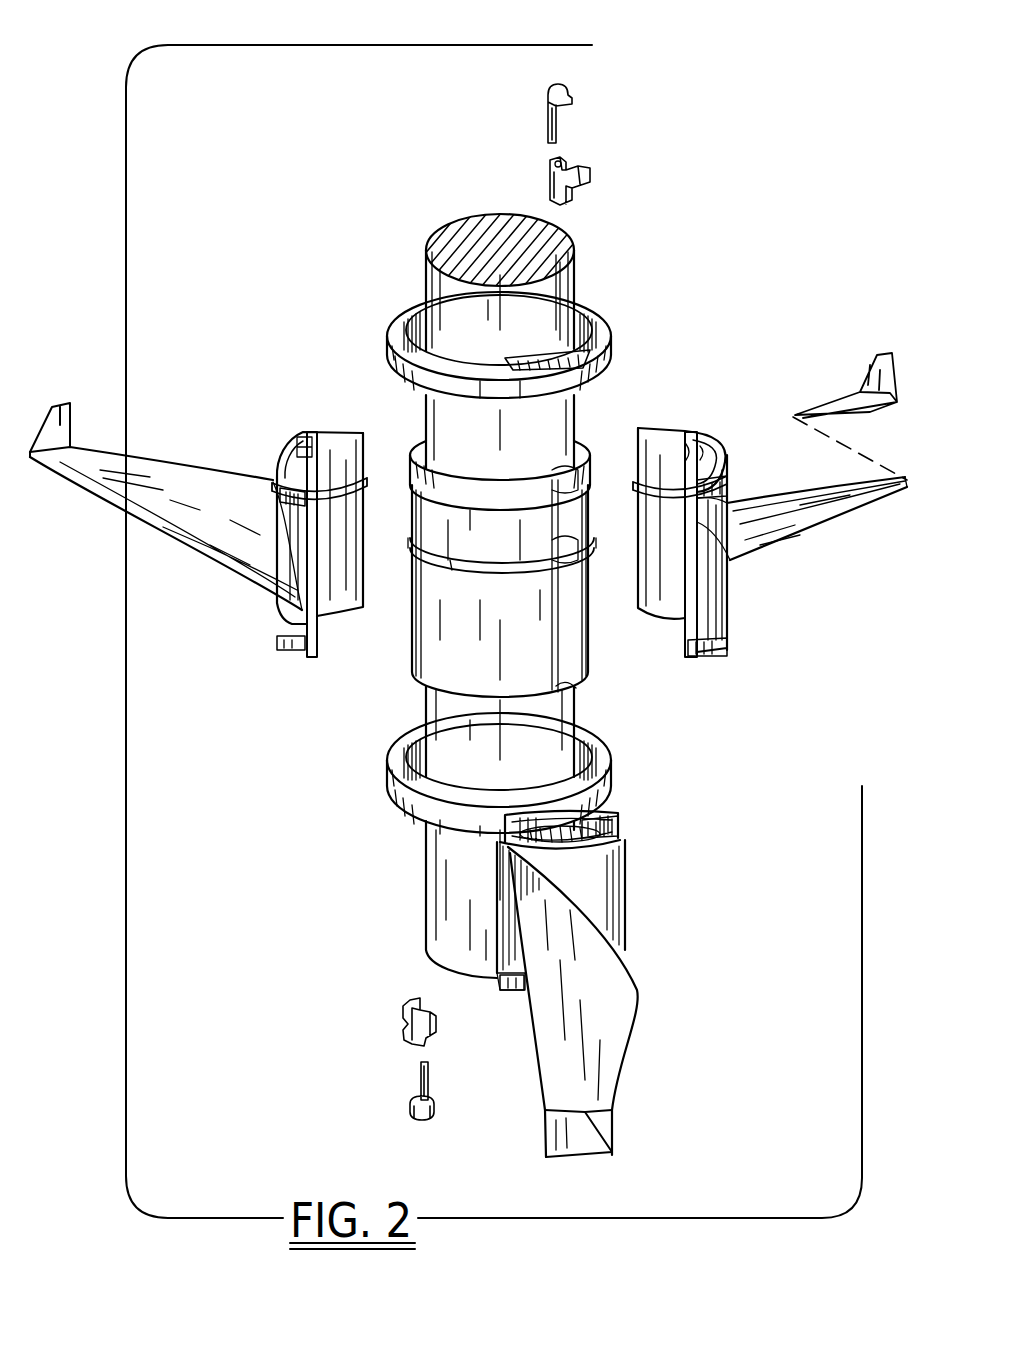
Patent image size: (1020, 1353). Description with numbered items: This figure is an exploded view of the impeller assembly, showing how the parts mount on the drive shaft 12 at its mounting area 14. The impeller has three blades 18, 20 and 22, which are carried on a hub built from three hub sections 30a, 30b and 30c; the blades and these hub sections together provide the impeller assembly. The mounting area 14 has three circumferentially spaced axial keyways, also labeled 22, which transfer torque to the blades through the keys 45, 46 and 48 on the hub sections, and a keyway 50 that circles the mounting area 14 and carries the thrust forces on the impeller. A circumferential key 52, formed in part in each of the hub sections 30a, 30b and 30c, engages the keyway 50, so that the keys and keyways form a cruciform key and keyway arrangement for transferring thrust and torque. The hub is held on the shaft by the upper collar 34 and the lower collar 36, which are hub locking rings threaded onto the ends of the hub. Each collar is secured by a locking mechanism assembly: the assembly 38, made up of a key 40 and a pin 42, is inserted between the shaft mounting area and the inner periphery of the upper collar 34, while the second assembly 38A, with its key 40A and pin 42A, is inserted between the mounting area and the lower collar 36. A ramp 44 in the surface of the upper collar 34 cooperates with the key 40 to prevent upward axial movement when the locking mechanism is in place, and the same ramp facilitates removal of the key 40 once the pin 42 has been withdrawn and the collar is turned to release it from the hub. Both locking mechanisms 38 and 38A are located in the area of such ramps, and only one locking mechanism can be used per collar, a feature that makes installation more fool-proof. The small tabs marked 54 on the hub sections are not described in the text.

The drive shaft 12 is at (497, 218).
The mounting area 14 is at (477, 569).
The blade 18 is at (223, 560).
The blade 20 is at (612, 1032).
The blade 22 is at (795, 496).
The hub section 30a is at (699, 527).
The hub section 30b is at (603, 881).
The hub section 30c is at (301, 520).
The upper collar 34 is at (525, 331).
The lower collar 36 is at (605, 748).
The locking mechanism assembly 38 is at (606, 144).
The locking mechanism assembly 38A is at (421, 1032).
The key 40 is at (590, 181).
The key 40A is at (420, 998).
The pin 42 is at (548, 106).
The pin 42A is at (431, 1082).
The ramp 44 is at (556, 335).
The key 45 is at (700, 430).
The key 46 is at (596, 816).
The key 48 is at (312, 450).
The keyway 50 is at (456, 566).
The circumferential key 52 is at (348, 480).
The tab 54 is at (288, 486).